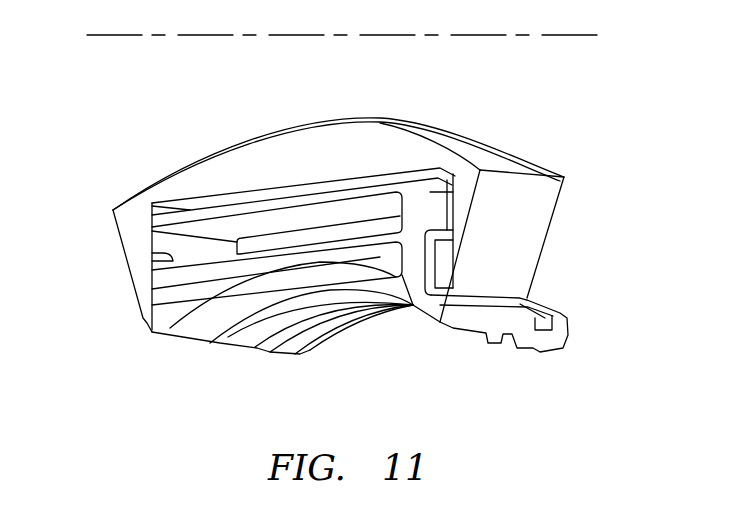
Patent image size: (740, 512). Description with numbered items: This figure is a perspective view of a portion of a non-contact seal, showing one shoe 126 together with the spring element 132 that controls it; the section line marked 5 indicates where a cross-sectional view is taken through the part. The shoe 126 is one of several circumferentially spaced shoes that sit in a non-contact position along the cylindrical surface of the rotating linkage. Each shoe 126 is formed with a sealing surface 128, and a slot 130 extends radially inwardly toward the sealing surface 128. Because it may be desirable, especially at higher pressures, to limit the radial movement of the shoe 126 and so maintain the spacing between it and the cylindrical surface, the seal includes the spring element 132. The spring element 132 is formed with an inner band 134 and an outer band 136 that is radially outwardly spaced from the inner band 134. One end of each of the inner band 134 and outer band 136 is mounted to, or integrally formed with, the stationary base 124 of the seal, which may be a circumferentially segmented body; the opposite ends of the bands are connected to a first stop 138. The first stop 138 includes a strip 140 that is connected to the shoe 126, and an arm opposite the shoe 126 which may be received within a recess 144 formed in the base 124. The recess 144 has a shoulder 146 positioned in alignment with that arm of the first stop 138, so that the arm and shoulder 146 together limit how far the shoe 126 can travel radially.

The section line 5- 5 is at (87, 35).
The stationary base 124 is at (418, 129).
The shoe 126 is at (186, 349).
The sealing surface 128 is at (220, 320).
The slot 130 is at (550, 315).
The spring element 132 is at (184, 192).
The inner band 134 is at (150, 259).
The outer band 136 is at (246, 202).
The first stop 138 is at (482, 170).
The strip 140 is at (417, 292).
The recess 144 is at (455, 198).
The shoulder 146 is at (442, 250).